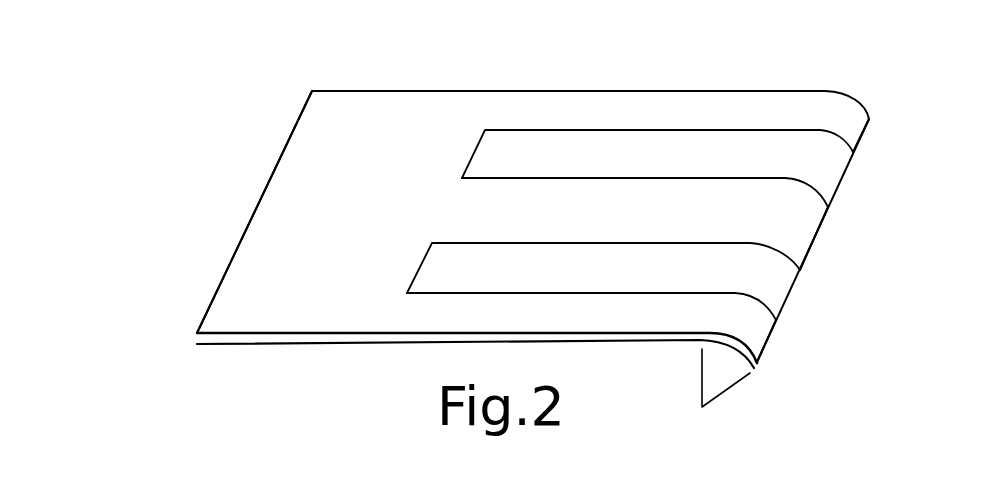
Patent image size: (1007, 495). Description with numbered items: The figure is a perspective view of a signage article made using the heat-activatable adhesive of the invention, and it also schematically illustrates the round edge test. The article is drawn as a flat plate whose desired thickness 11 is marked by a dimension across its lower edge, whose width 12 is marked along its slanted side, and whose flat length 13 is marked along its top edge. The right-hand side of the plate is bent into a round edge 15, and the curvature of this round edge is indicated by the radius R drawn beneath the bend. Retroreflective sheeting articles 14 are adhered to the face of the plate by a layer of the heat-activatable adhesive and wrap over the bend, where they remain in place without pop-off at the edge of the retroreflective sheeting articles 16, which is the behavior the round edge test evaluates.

The thickness 11 is at (190, 344).
The width 12 is at (312, 91).
The flat length 13 is at (824, 80).
The retroreflective sheeting articles 14 is at (660, 165).
The round edge 15 is at (812, 237).
The edge of the retroreflective sheeting articles 16 is at (843, 182).
The radius R is at (700, 362).